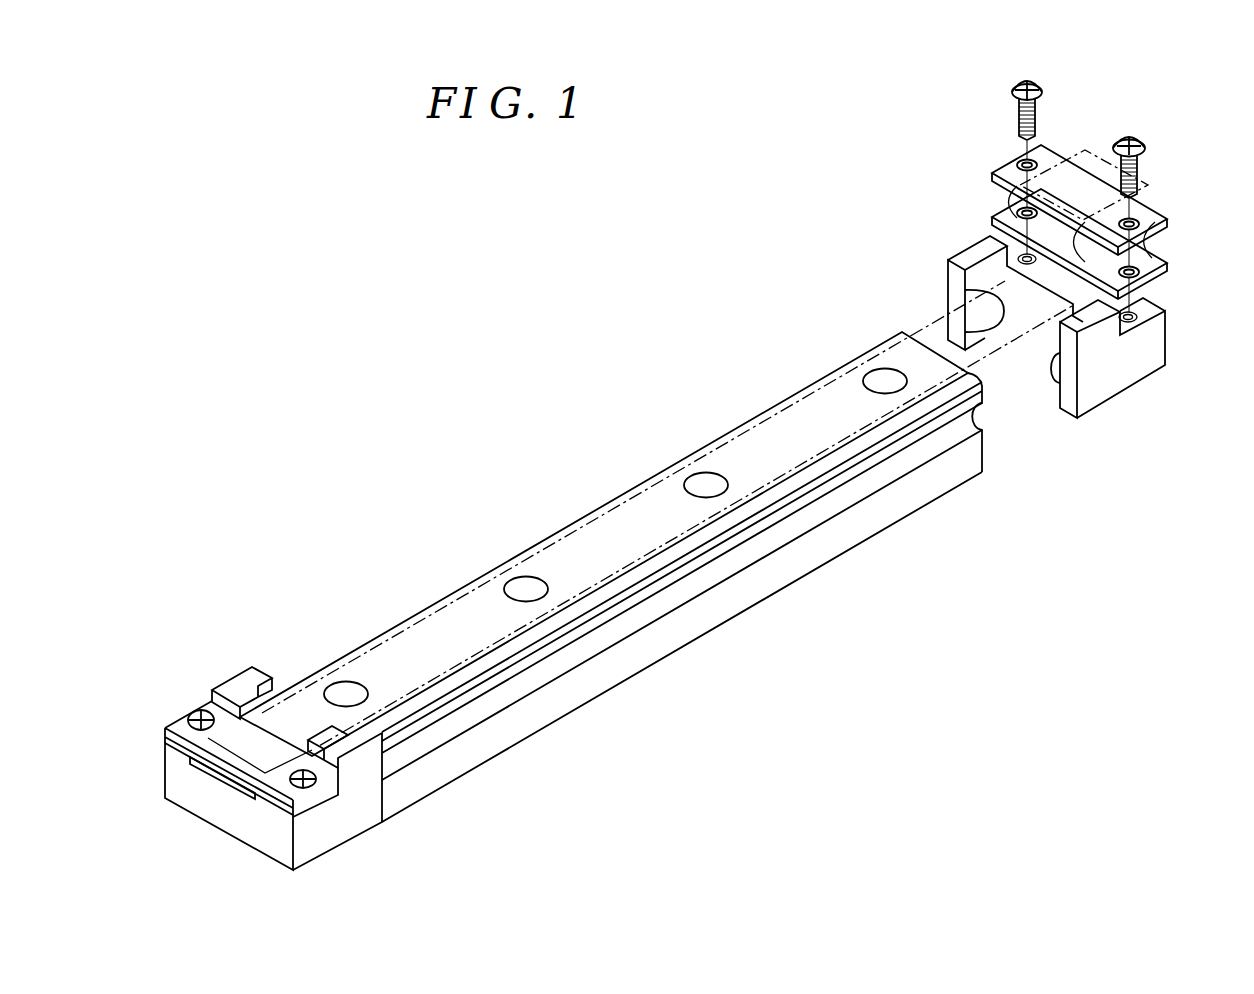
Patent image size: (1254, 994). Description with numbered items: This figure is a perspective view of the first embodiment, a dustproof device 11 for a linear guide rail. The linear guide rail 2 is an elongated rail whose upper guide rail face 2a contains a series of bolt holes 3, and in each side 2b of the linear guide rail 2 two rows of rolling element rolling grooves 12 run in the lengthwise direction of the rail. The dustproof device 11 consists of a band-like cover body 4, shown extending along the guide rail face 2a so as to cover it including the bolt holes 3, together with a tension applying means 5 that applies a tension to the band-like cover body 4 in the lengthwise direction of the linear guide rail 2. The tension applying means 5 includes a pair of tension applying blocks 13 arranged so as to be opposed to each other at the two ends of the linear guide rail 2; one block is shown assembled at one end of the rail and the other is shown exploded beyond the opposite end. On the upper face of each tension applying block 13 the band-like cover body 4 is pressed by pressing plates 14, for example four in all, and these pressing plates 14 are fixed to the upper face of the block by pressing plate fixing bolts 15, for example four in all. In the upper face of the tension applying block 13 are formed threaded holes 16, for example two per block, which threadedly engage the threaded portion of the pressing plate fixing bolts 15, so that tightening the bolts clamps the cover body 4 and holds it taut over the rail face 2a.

The linear guide rail 2 is at (686, 633).
The guide rail face 2a is at (416, 641).
The side of linear guide rail 2b is at (540, 722).
The bolt holes 3 is at (700, 472).
The band-like cover body 4 is at (772, 406).
The tension applying means 5 is at (934, 293).
The dustproof device for linear guide rail 11 is at (858, 271).
The rolling element rolling grooves 12 is at (875, 443).
The tension applying blocks 13 is at (1134, 362).
The pressing plates 14 is at (1170, 222).
The pressing plate fixing bolts 15 is at (1040, 80).
The threaded holes 16 is at (1138, 312).